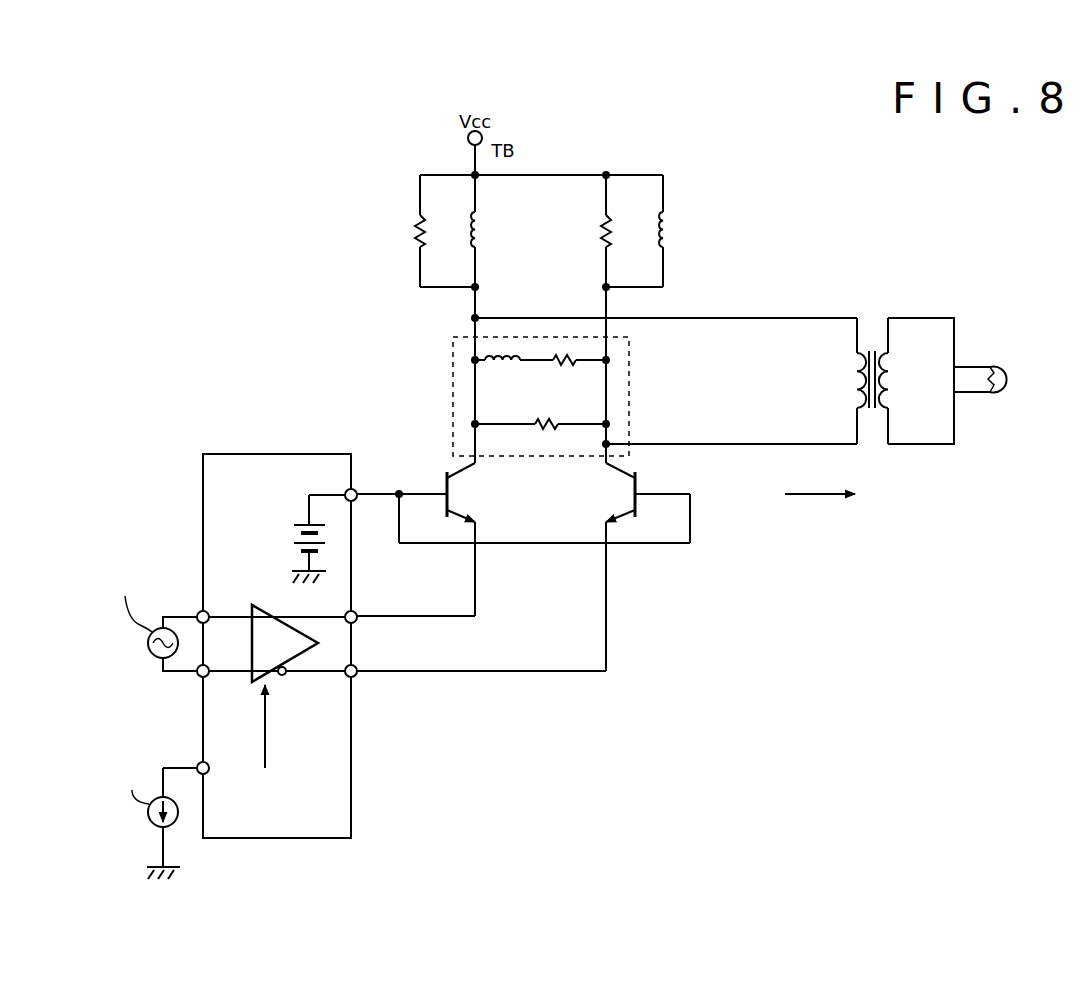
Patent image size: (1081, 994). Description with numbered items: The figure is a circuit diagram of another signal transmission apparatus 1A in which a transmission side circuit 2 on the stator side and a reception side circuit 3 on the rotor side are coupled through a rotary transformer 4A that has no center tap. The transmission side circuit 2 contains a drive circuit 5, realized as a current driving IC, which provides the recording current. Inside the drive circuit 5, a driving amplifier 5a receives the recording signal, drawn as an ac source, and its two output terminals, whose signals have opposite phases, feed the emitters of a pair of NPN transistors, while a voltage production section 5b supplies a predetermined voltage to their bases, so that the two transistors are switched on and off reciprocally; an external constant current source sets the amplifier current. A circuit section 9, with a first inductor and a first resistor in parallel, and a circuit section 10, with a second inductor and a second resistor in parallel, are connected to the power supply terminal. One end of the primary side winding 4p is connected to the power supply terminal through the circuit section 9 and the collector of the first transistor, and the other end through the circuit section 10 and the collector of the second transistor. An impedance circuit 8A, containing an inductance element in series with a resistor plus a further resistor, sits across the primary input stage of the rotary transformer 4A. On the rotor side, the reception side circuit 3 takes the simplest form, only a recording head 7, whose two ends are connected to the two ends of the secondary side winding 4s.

The signal transmission apparatus 1A is at (289, 270).
The transmission side circuit 2 is at (190, 396).
The reception side circuit 3 is at (935, 502).
The rotary transformer 4A is at (878, 302).
The primary side winding 4p is at (856, 393).
The secondary side winding 4s is at (893, 368).
The drive circuit 5 is at (280, 454).
The driving amplifier 5a is at (266, 604).
The voltage production section 5b is at (302, 522).
The recording head 7 is at (1004, 394).
The impedance circuit 8A is at (450, 426).
The circuit section 9 is at (406, 200).
The circuit section 10 is at (693, 190).